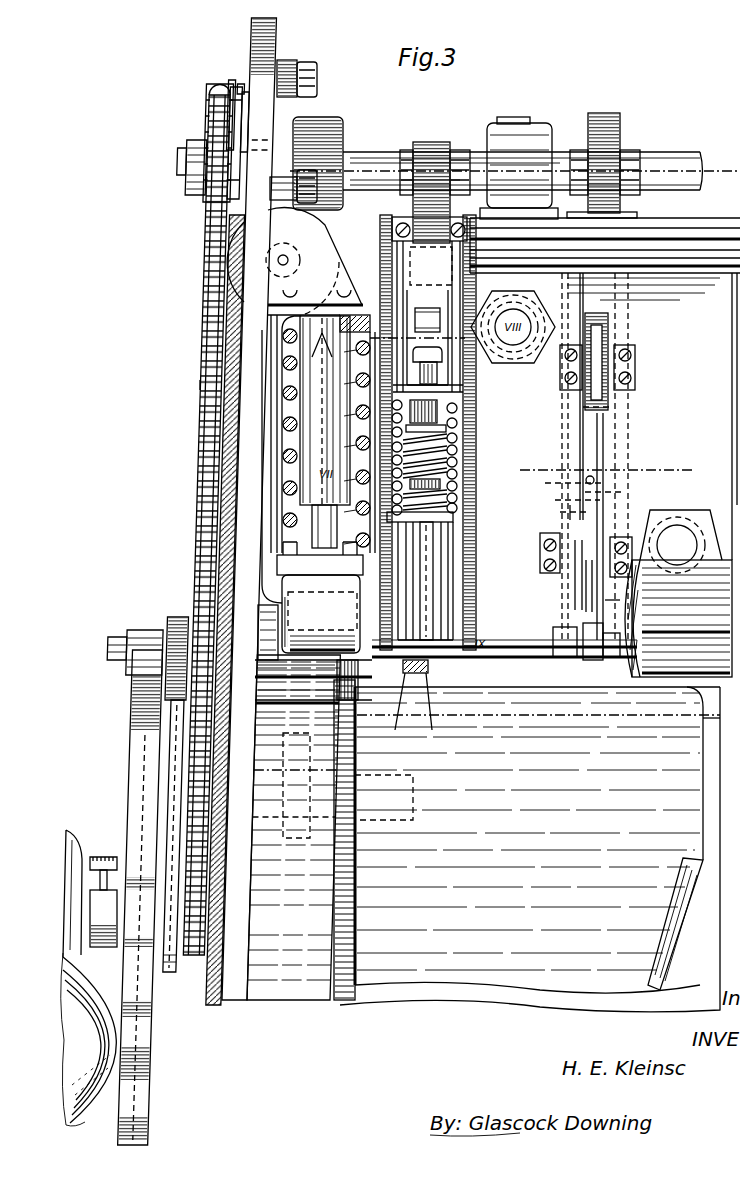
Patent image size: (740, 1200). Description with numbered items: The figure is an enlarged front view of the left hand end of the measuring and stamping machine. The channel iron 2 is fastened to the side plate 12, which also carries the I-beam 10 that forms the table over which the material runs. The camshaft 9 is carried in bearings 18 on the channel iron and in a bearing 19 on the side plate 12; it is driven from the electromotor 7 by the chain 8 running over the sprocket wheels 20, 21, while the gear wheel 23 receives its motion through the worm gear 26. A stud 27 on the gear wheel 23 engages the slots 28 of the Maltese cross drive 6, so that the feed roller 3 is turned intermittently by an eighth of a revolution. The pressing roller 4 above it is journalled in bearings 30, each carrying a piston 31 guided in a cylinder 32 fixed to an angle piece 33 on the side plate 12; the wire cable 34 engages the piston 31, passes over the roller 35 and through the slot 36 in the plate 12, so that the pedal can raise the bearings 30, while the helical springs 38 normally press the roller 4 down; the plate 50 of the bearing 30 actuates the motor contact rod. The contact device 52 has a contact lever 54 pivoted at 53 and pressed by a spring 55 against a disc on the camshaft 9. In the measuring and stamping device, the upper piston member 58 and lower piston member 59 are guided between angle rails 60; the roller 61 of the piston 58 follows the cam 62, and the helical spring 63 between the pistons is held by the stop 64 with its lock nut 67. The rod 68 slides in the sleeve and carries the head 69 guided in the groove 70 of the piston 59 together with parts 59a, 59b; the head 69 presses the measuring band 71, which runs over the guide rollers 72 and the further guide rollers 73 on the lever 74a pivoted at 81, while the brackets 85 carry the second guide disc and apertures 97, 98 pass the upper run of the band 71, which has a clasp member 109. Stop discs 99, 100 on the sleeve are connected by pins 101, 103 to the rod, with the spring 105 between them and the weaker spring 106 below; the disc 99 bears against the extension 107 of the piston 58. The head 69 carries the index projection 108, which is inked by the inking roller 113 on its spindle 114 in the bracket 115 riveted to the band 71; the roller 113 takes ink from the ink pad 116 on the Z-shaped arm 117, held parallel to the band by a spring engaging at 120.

The channel iron 2 is at (628, 456).
The feed roller 3 is at (527, 846).
The pressing roller 4 is at (693, 565).
The Maltese cross drive 6 is at (135, 852).
The electromotor 7 is at (80, 1087).
The chain 8 is at (200, 383).
The camshaft 9 is at (181, 163).
The I-beam 10 is at (293, 827).
The side plate 12 is at (250, 30).
The bearing 18 is at (505, 127).
The bearing 19 is at (320, 125).
The sprocket wheel 20 is at (212, 110).
The sprocket wheel 21 is at (196, 972).
The gear wheel 23 is at (177, 617).
The worm gear 26 is at (75, 847).
The stud 27 is at (143, 636).
The slot 28 is at (145, 690).
The bearing 30 is at (282, 572).
The piston 31 is at (312, 507).
The cylinder 32 is at (300, 475).
The angle piece 33 is at (267, 370).
The wire cable 34 is at (243, 293).
The roller 35 is at (243, 257).
The slot 36 is at (300, 215).
The helical spring 38 is at (283, 427).
The plate 50 is at (280, 557).
The contact device 52 is at (245, 120).
The pivot 53 is at (245, 100).
The contact lever 54 is at (238, 85).
The spring 55 is at (229, 90).
The upper piston member 58 is at (630, 223).
The lower piston member 59 is at (447, 573).
The slide part 59a is at (557, 657).
The slide part 59b is at (612, 657).
The angle rail 60 is at (452, 303).
The roller 61 is at (410, 228).
The cam 62 is at (427, 143).
The helical spring 63 is at (457, 473).
The stop 64 is at (442, 358).
The lock nut 67 is at (366, 365).
The rod 68 is at (425, 607).
The head 69 is at (495, 670).
The groove 70 is at (589, 652).
The measuring band 71 is at (597, 435).
The guide roller 72 is at (564, 654).
The guide roller 73 is at (612, 590).
The lever 74a is at (575, 583).
The pivot 81 is at (542, 552).
The bracket 85 is at (633, 350).
The aperture 97 is at (593, 317).
The aperture 98 is at (427, 320).
The upper stop disc 99 is at (457, 437).
The lower stop disc 100 is at (453, 484).
The pin 101 is at (460, 423).
The pin 103 is at (455, 498).
The spring 105 is at (460, 453).
The spring 106 is at (387, 517).
The extension 107 is at (463, 413).
The projection 108 is at (409, 701).
The clasp member 109 is at (633, 393).
The inking roller 113 is at (590, 483).
The spindle 114 is at (620, 492).
The bracket 115 is at (600, 473).
The ink pad 116 is at (586, 590).
The Z-shaped arm 117 is at (570, 513).
The spring attachment point 120 is at (567, 503).